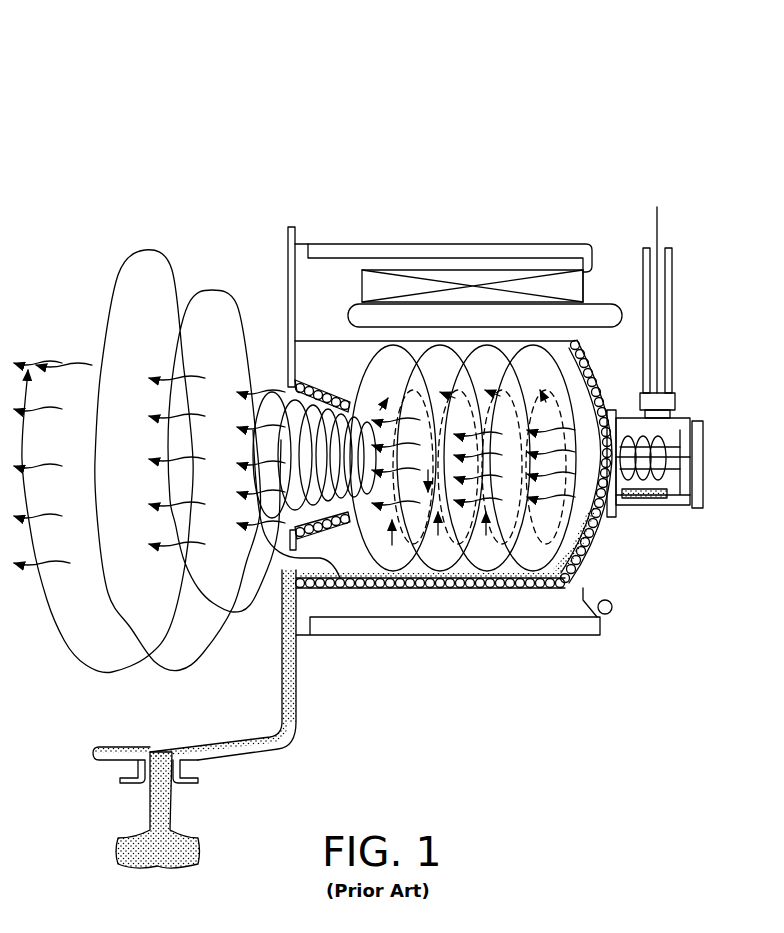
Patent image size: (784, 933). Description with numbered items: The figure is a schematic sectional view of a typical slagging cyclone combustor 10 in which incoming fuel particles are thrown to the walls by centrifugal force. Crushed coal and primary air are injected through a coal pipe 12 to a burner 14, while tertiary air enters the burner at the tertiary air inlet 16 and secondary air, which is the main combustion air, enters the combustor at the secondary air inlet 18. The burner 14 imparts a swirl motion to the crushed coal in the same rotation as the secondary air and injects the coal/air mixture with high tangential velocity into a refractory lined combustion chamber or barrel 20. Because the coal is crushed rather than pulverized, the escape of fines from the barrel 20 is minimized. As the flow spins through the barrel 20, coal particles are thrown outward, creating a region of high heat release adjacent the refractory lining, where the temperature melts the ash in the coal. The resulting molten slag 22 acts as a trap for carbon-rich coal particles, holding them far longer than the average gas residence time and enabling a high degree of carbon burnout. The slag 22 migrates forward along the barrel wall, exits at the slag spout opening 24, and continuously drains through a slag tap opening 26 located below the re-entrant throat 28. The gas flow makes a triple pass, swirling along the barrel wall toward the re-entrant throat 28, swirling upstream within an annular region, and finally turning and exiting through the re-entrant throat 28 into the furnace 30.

The cyclone combustor 10 is at (604, 122).
The coal pipe 12 is at (672, 258).
The burner 14 is at (703, 470).
The tertiary air inlet 16 is at (680, 456).
The secondary air inlet 18 is at (390, 286).
The combustion chamber or barrel 20 is at (497, 586).
The molten slag 22 is at (592, 558).
The slag spout opening 24 is at (328, 588).
The slag tap opening 26 is at (158, 752).
The re-entrant throat 28 is at (322, 383).
The furnace 30 is at (75, 328).